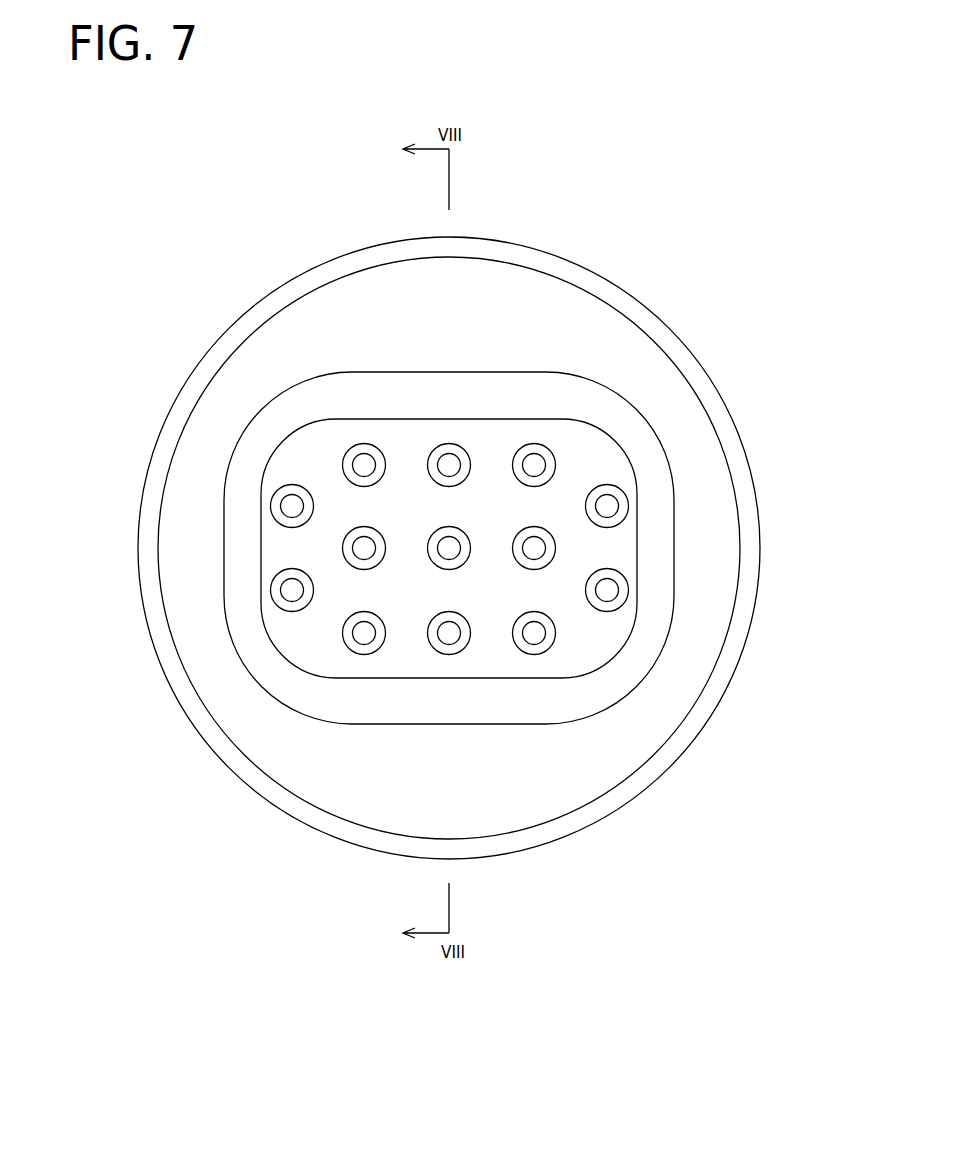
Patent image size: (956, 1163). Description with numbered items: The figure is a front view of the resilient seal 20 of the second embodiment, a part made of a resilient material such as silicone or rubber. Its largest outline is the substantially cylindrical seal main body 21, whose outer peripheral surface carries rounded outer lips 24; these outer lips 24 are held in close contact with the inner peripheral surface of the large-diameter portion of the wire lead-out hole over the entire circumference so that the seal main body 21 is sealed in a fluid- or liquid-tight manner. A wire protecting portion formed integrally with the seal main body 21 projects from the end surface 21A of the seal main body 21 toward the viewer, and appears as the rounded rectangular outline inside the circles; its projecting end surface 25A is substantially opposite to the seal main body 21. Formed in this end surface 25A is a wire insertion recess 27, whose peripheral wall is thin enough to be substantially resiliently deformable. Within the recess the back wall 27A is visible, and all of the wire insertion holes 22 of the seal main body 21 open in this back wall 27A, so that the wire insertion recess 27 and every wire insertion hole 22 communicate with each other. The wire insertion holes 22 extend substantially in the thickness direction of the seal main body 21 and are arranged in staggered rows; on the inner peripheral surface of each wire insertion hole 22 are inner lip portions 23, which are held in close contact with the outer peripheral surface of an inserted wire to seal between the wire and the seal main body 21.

The resilient seal 20 is at (569, 205).
The seal main body 21 is at (751, 509).
The end surface 21A is at (712, 617).
The wire insertion hole 22 is at (455, 648).
The inner lip portion 23 is at (357, 450).
The outer lip 24 is at (617, 293).
The end surface 25A is at (348, 705).
The wire insertion recess 27 is at (593, 652).
The back wall 27A is at (312, 623).